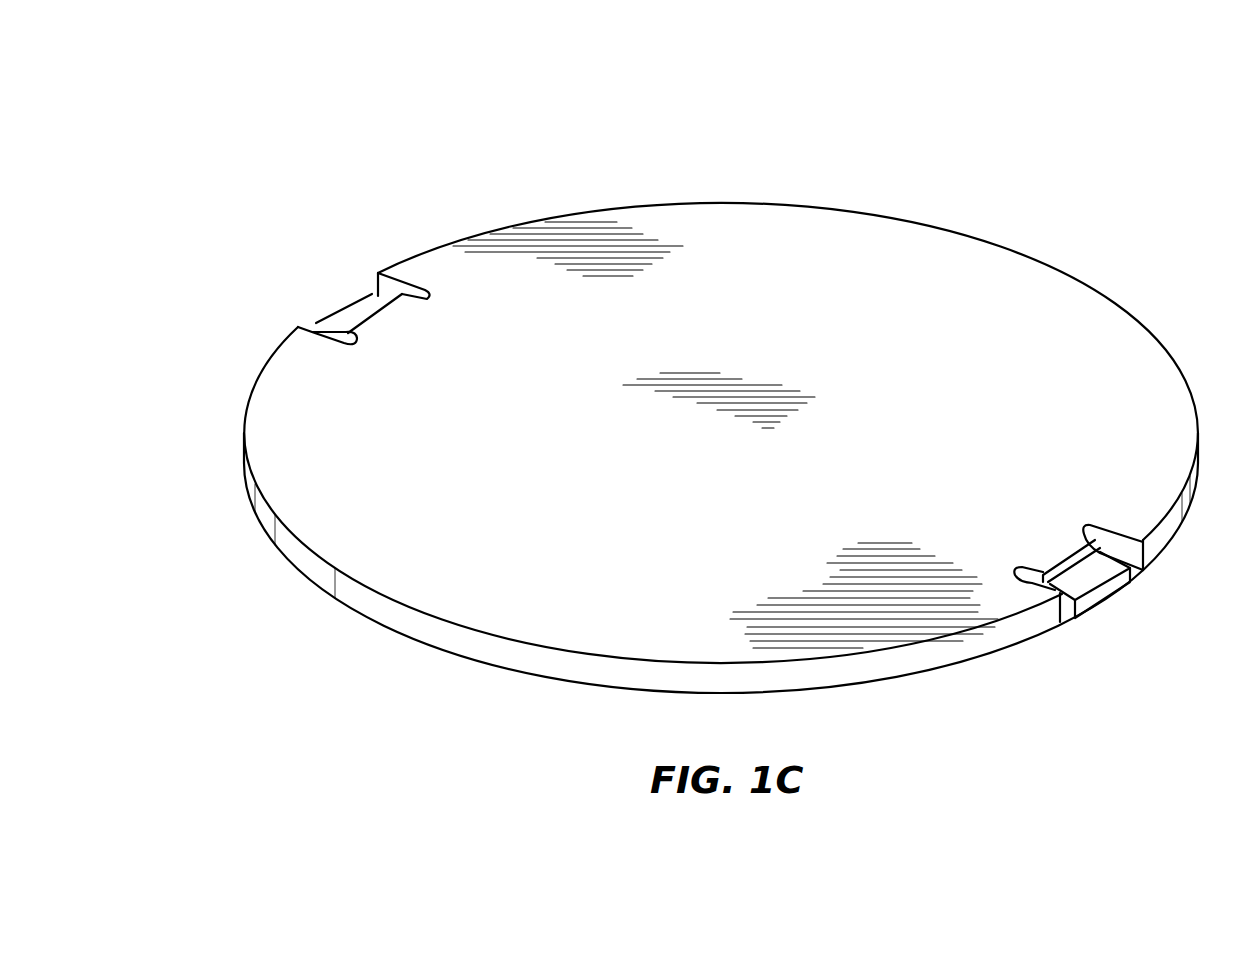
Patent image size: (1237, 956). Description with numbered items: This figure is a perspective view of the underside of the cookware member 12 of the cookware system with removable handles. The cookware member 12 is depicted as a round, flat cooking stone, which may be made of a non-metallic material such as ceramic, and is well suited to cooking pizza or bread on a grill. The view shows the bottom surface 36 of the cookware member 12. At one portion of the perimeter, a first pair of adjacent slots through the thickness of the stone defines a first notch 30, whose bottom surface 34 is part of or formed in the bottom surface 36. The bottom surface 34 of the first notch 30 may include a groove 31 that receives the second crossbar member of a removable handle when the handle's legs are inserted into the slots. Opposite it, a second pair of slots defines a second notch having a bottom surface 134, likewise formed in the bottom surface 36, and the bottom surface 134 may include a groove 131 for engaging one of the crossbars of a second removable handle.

The cookware member 12 is at (703, 383).
The bottom surface 36 is at (921, 270).
The first notch 30 is at (313, 261).
The bottom surface 34 is at (358, 292).
The groove 31 is at (330, 327).
The bottom surface 134 is at (1112, 540).
The groove 131 is at (1086, 583).